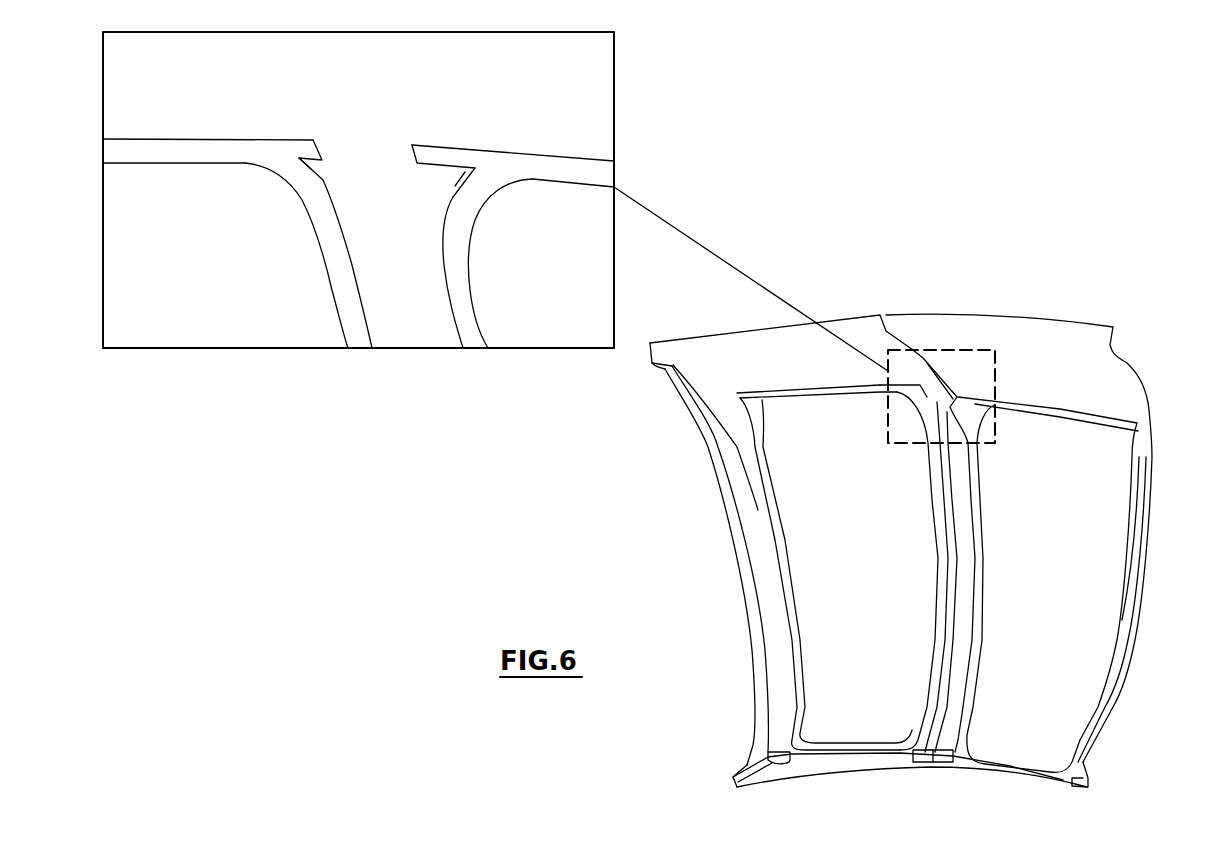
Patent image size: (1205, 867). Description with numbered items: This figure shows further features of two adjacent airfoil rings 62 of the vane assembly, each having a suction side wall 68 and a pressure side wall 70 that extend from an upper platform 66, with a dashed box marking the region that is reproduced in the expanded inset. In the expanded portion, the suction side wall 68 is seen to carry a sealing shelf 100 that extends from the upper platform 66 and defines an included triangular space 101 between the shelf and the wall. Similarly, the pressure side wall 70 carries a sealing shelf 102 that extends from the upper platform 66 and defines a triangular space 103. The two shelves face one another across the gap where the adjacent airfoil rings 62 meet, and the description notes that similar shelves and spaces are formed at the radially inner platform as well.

The airfoil ring 62 is at (730, 343).
The upper platform 66 is at (218, 150).
The suction side wall 68 is at (335, 248).
The pressure side wall 70 is at (460, 270).
The sealing shelf 100 is at (300, 147).
The triangular space 101 is at (313, 167).
The sealing shelf 102 is at (452, 157).
The triangular space 103 is at (462, 173).